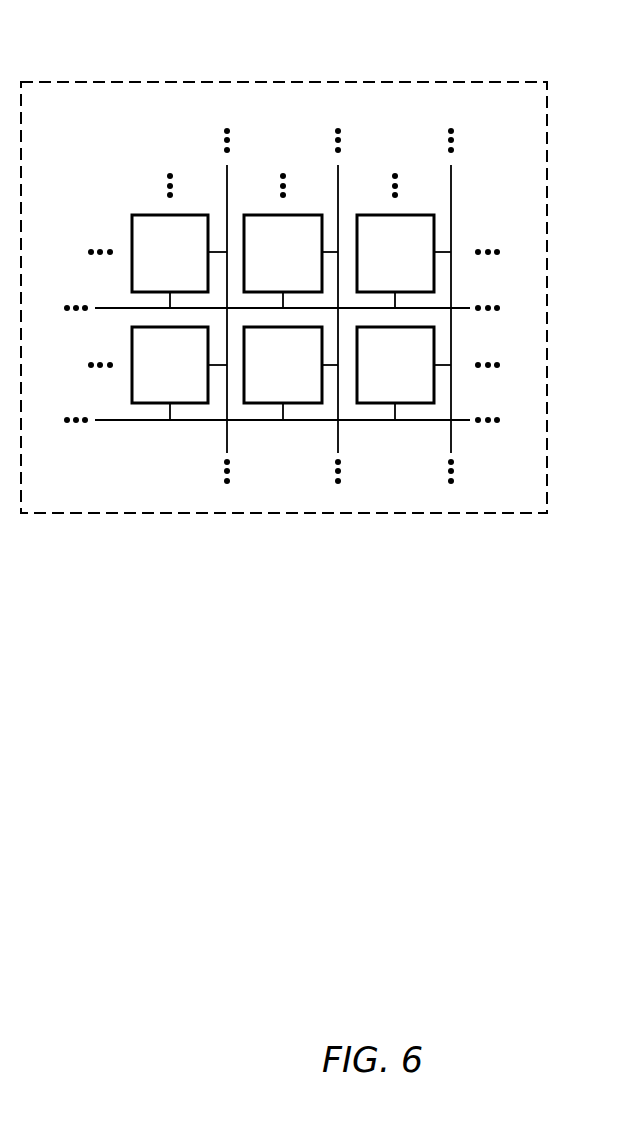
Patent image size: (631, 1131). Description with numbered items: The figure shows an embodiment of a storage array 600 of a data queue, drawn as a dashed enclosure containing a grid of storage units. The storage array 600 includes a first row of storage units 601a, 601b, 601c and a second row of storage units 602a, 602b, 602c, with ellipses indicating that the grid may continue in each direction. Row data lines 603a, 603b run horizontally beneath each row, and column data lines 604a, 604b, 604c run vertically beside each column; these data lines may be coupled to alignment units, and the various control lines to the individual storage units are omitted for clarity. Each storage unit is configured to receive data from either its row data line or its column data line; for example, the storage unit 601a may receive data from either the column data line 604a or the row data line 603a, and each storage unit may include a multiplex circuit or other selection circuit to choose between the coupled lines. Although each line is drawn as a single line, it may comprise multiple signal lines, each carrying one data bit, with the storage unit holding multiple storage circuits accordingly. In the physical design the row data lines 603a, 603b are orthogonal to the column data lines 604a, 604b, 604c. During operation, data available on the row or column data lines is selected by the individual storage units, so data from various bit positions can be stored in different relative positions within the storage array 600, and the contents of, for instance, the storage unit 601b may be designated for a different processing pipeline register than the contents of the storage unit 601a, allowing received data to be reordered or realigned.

The storage array 600 is at (511, 78).
The storage unit 601a is at (179, 261).
The storage unit 601b is at (291, 261).
The storage unit 601c is at (404, 261).
The storage unit 602a is at (179, 373).
The storage unit 602b is at (291, 373).
The storage unit 602c is at (404, 373).
The row data line 603a is at (112, 310).
The row data line 603b is at (110, 422).
The column data line 604a is at (227, 437).
The column data line 604b is at (338, 437).
The column data line 604c is at (451, 437).